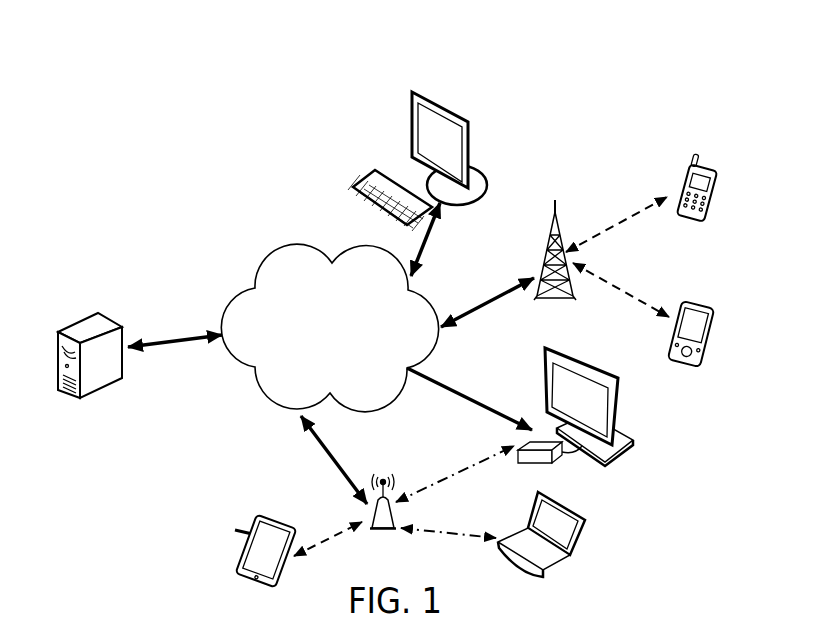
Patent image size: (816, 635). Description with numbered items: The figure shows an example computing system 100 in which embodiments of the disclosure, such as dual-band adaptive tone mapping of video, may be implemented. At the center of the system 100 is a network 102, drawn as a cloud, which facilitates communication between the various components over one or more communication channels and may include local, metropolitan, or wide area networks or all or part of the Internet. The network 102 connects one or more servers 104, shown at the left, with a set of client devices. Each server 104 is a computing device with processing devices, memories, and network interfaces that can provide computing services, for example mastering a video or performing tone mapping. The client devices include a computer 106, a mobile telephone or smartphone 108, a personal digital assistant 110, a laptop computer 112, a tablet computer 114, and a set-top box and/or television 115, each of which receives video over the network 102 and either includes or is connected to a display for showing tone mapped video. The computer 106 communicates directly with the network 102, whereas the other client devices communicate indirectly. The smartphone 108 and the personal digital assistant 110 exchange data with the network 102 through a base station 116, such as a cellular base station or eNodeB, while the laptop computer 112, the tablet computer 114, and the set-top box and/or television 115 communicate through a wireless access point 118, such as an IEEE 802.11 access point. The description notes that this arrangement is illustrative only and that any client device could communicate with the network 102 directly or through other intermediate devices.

The computing system 100 is at (196, 137).
The network 102 is at (264, 256).
The server 104 is at (70, 327).
The computer 106 is at (476, 127).
The mobile telephone or smartphone 108 is at (710, 173).
The personal digital assistant 110 is at (710, 310).
The laptop computer 112 is at (563, 563).
The tablet computer 114 is at (255, 512).
The set-top box and/or television 115 is at (615, 460).
The base station 116 is at (576, 290).
The wireless access point 118 is at (393, 502).